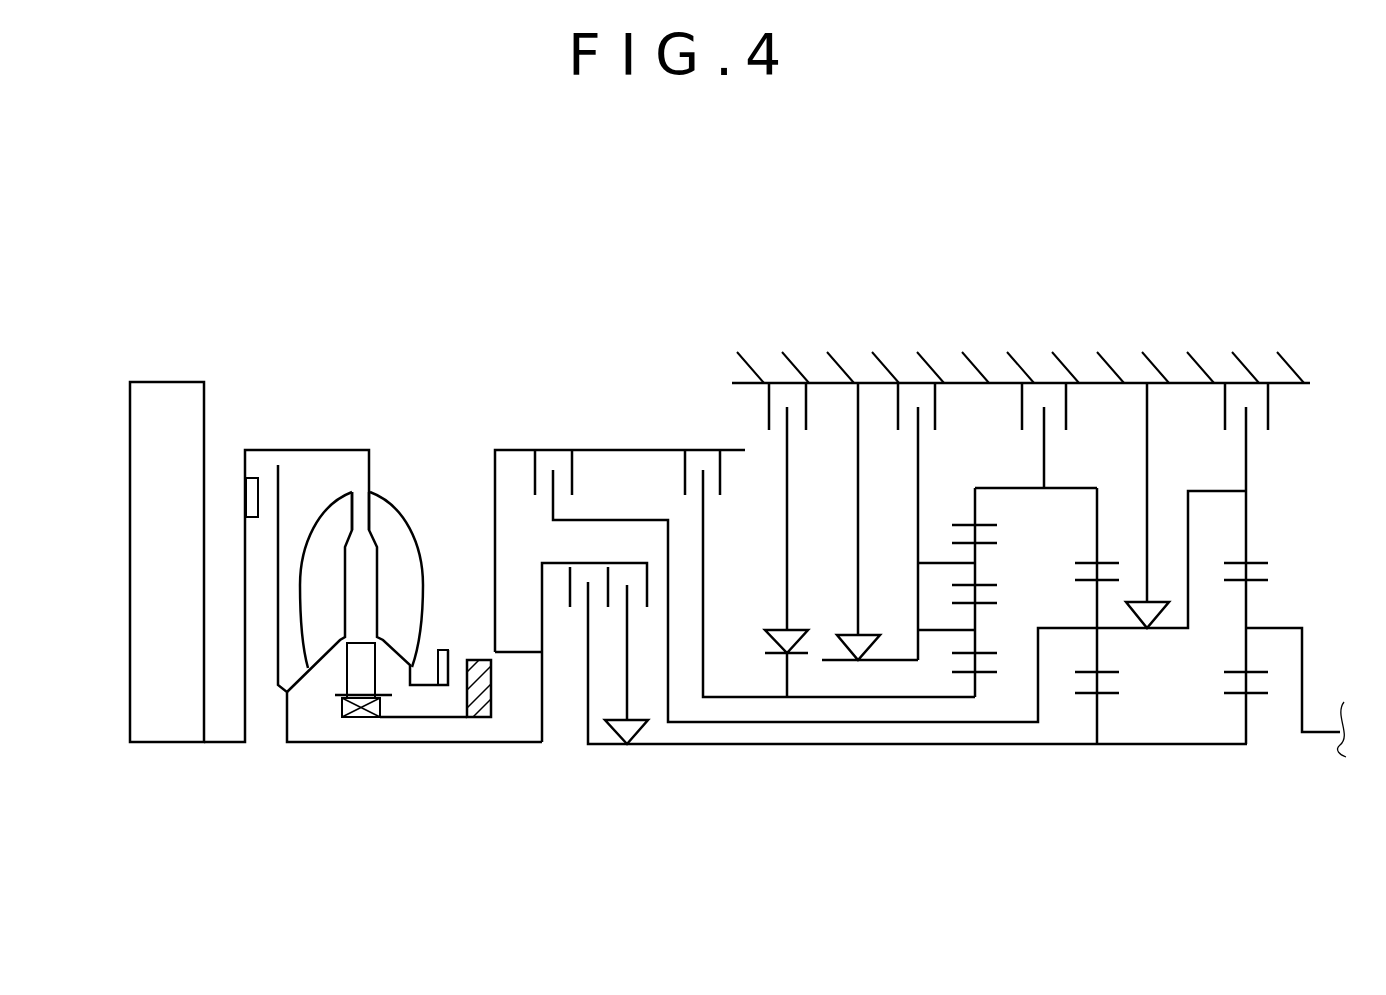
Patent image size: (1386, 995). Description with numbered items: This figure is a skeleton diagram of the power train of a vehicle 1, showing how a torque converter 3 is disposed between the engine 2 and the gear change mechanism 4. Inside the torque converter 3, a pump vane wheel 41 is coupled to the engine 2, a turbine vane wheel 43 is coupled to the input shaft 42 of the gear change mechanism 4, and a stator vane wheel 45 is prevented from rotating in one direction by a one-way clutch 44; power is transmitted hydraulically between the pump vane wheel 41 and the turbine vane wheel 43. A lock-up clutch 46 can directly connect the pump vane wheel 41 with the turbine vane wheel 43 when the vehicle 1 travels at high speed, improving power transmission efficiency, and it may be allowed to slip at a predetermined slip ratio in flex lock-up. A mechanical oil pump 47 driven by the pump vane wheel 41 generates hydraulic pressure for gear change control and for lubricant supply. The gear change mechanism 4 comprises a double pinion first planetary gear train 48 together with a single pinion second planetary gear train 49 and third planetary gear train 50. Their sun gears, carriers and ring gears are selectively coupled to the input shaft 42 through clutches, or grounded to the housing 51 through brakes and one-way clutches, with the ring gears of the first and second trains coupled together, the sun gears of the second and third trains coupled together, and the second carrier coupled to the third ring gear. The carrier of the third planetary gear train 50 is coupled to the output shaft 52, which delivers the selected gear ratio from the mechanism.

The vehicle 1 is at (1200, 170).
The engine 2 is at (166, 438).
The torque converter 3 is at (394, 433).
The gear change mechanism 4 is at (1105, 283).
The pump vane wheel 41 is at (402, 512).
The input shaft 42 is at (417, 742).
The turbine vane wheel 43 is at (332, 492).
The one-way clutch 44 is at (362, 717).
The stator vane wheel 45 is at (347, 667).
The lock-up clutch 46 is at (260, 467).
The mechanical oil pump 47 is at (438, 650).
The first planetary gear train 48 is at (950, 712).
The second planetary gear train 49 is at (1096, 762).
The third planetary gear train 50 is at (1248, 757).
The housing 51 is at (975, 357).
The output shaft 52 is at (1324, 742).